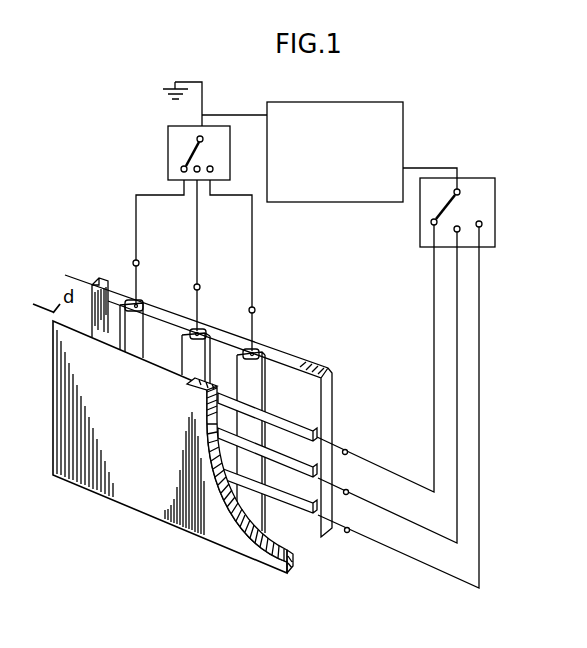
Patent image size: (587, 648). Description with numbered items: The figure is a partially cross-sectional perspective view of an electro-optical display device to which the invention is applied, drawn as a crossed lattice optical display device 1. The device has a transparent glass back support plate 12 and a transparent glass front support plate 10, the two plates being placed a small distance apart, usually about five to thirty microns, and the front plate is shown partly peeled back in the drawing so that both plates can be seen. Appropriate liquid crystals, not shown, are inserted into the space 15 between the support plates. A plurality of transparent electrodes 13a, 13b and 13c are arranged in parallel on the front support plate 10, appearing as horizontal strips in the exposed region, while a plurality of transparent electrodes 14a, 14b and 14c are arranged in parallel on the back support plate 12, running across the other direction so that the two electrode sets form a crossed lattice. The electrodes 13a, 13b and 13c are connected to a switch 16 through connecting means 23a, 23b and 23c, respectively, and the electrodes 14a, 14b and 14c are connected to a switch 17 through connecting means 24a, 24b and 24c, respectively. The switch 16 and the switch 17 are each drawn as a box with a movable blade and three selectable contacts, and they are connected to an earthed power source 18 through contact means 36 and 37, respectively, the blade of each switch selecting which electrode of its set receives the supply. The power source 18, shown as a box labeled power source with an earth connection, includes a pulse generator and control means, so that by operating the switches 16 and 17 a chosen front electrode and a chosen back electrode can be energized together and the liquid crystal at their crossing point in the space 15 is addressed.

The crossed lattice optical display device 1 is at (115, 428).
The transparent glass front support plate 10 is at (173, 447).
The transparent glass back support plate 12 is at (311, 361).
The transparent electrode 13a is at (318, 434).
The transparent electrode 13b is at (318, 472).
The transparent electrode 13c is at (318, 510).
The transparent electrode 14a is at (140, 304).
The transparent electrode 14b is at (200, 330).
The transparent electrode 14c is at (257, 354).
The space 15 is at (108, 281).
The switch 16 is at (496, 200).
The switch 17 is at (168, 142).
The earthed power source 18 is at (403, 113).
The connecting means 23a is at (434, 286).
The connecting means 23b is at (457, 327).
The connecting means 23c is at (479, 403).
The connecting means 24a is at (137, 236).
The connecting means 24b is at (197, 262).
The connecting means 24c is at (253, 300).
The contact means 36 is at (447, 206).
The contact means 37 is at (190, 155).